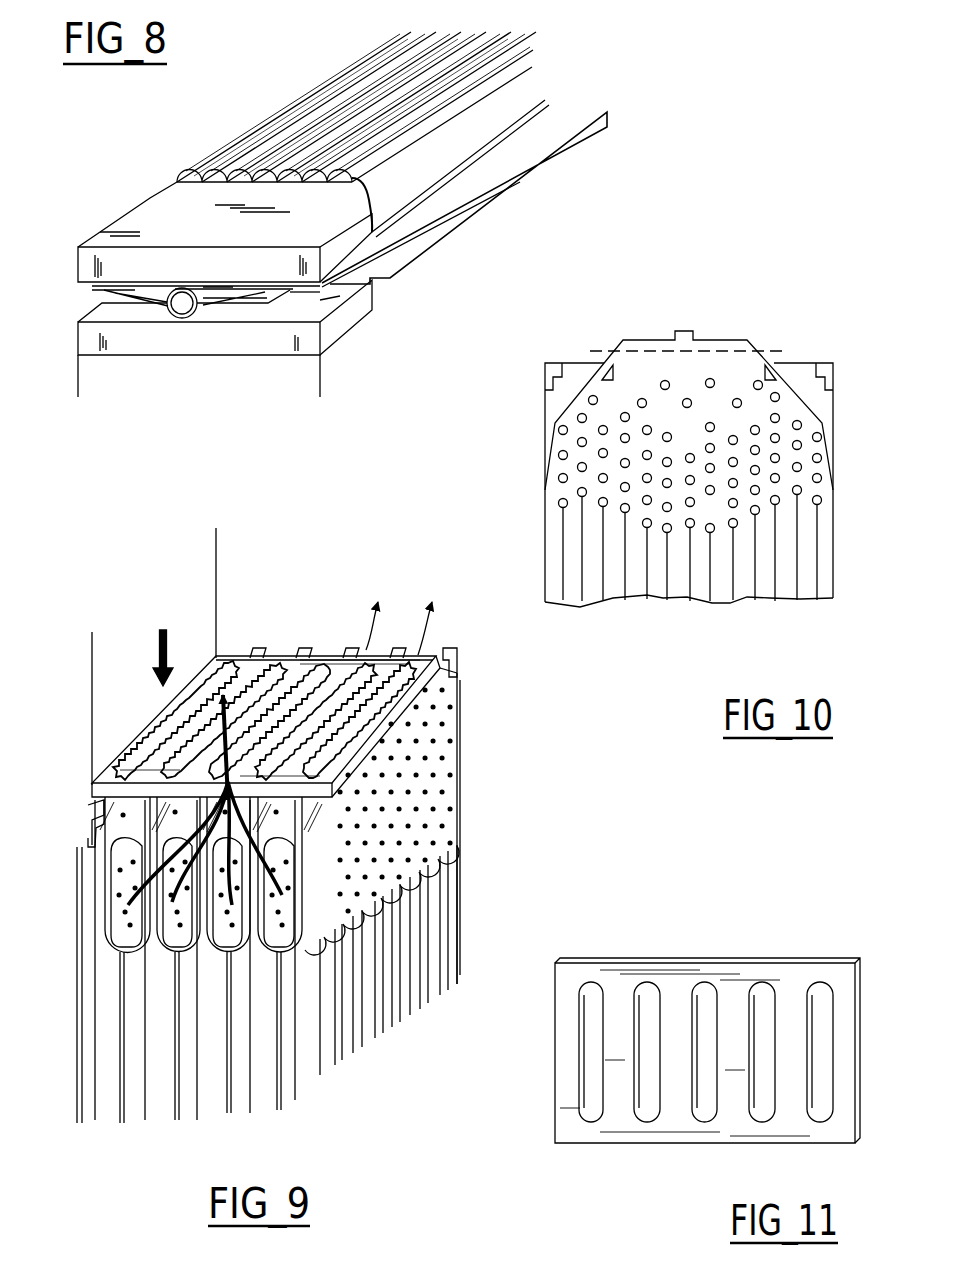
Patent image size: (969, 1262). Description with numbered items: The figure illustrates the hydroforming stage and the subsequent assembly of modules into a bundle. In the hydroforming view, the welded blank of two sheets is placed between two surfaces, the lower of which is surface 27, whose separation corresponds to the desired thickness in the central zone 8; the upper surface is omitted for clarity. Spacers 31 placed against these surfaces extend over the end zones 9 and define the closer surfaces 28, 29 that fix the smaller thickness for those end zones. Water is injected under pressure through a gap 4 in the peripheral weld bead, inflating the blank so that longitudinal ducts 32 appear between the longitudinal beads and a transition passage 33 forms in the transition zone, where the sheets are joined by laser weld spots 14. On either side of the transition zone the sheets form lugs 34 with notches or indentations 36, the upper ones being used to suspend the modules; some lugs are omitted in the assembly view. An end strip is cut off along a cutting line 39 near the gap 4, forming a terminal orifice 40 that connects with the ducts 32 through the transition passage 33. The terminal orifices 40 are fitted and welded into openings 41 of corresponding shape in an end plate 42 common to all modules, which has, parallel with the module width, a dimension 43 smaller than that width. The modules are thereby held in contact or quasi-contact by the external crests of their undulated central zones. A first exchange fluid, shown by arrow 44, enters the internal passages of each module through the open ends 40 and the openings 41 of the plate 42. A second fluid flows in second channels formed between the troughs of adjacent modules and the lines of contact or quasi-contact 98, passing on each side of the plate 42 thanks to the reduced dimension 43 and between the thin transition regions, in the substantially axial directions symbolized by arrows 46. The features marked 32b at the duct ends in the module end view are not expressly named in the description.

In FIG. 8, the central zone 8 is at (262, 113).
In FIG. 8, the end zones 9 is at (70, 297).
In FIG. 8, the gap 4 is at (185, 308).
In FIG. 8, the surface 27 is at (527, 190).
In FIG. 8, the surface 28 is at (292, 293).
In FIG. 8, the surface 29 is at (333, 300).
In FIG. 8, the spacers 31 is at (167, 235).
In FIG. 8, the longitudinal ducts 32 is at (415, 108).
In FIG. 10, the fiber pins 32b is at (647, 572).
In FIG. 10, the laser weld spots 14 is at (795, 398).
In FIG. 10, the cutting line 39 is at (722, 340).
In FIG. 9, the transition passage 33 is at (402, 670).
In FIG. 9, the lugs 34 is at (453, 692).
In FIG. 9, the notches or indentations 36 is at (457, 667).
In FIG. 9, the terminal orifice 40 is at (390, 727).
In FIG. 11, the openings 41 is at (757, 1020).
In FIG. 9, the end plate 42 is at (335, 672).
In FIG. 11, the end plate 42 is at (712, 960).
In FIG. 9, the dimension 43 is at (97, 641).
In FIG. 9, the arrow 44 is at (170, 640).
In FIG. 9, the arrows 46 is at (178, 742).
In FIG. 9, the lines of contact or quasi-contact 98 is at (115, 1077).